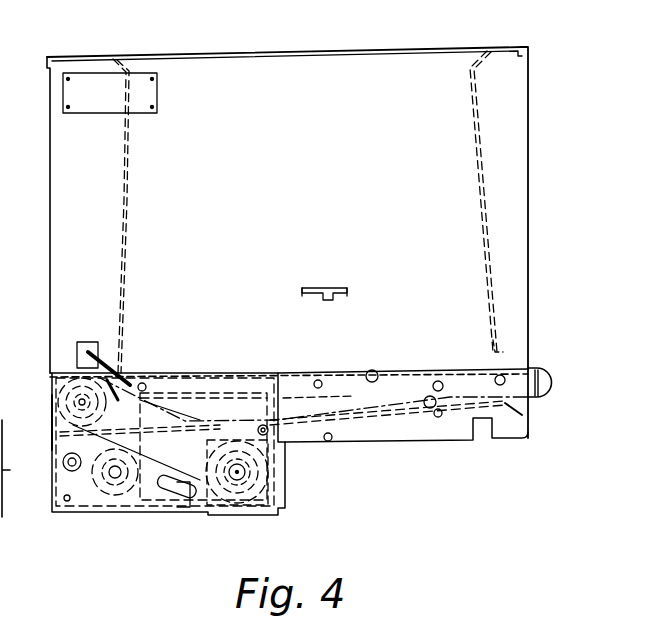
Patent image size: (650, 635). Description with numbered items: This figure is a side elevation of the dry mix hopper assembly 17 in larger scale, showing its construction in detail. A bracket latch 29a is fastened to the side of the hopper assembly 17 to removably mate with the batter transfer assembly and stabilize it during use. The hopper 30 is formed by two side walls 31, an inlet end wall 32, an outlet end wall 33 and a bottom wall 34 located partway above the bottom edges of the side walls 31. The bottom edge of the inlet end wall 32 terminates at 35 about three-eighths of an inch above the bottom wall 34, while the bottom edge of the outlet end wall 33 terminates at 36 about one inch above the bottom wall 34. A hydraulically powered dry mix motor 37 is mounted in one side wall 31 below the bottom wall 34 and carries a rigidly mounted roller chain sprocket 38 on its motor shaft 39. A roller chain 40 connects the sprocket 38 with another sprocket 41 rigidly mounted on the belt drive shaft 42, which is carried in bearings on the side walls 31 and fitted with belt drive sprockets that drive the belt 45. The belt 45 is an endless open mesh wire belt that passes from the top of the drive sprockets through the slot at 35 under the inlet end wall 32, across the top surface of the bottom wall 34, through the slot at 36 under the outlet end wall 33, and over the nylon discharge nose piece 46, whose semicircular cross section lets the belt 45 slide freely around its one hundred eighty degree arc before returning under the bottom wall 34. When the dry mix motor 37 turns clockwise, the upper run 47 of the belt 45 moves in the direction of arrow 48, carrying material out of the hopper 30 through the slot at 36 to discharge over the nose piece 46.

The dry mix hopper assembly 17 is at (372, 38).
The bracket latch 29a is at (325, 287).
The hopper 30 is at (263, 50).
The side walls 31 is at (196, 96).
The inlet end wall 32 is at (123, 156).
The outlet end wall 33 is at (483, 147).
The bottom wall 34 is at (369, 372).
The slot under inlet end wall 35 is at (127, 375).
The slot under outlet end wall 36 is at (508, 356).
The dry mix motor 37 is at (267, 515).
The roller chain sprocket 38 is at (285, 464).
The motor shaft 39 is at (285, 481).
The roller chain 40 is at (178, 527).
The sprocket 41 is at (46, 436).
The belt drive shaft 42 is at (55, 397).
The belt 45 is at (342, 427).
The discharge nose piece 46 is at (544, 403).
The upper run 47 is at (292, 373).
The arrow 48 is at (476, 355).